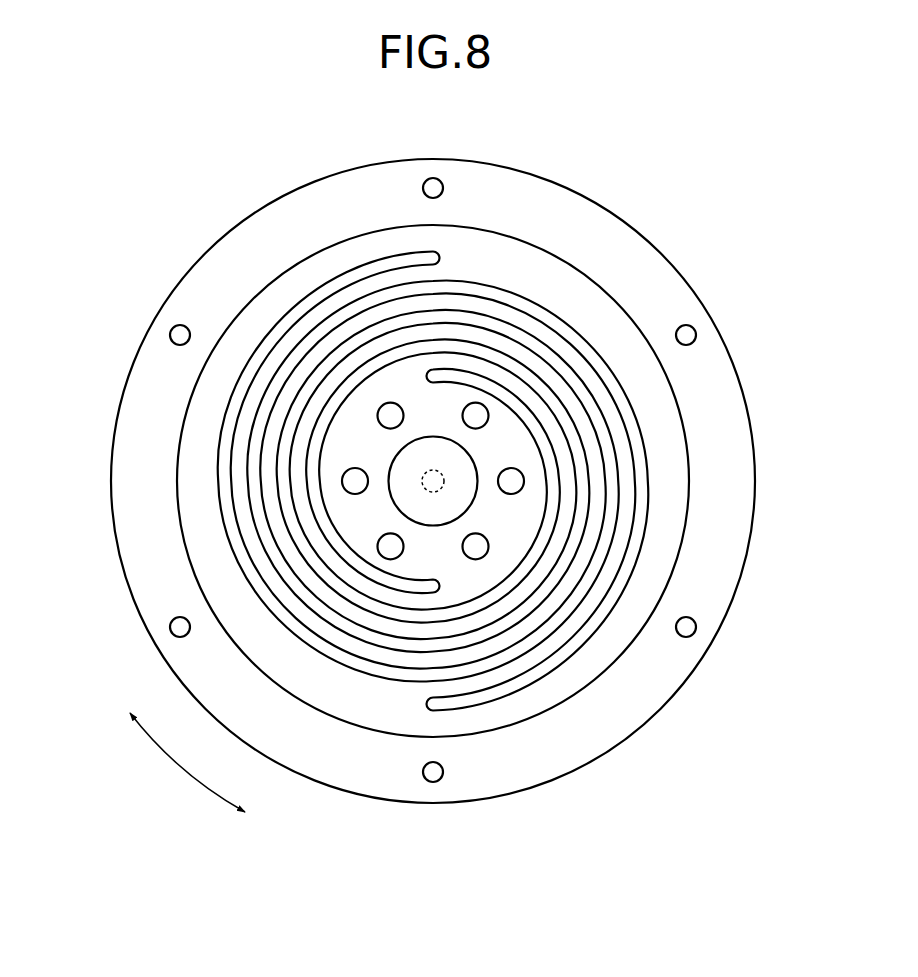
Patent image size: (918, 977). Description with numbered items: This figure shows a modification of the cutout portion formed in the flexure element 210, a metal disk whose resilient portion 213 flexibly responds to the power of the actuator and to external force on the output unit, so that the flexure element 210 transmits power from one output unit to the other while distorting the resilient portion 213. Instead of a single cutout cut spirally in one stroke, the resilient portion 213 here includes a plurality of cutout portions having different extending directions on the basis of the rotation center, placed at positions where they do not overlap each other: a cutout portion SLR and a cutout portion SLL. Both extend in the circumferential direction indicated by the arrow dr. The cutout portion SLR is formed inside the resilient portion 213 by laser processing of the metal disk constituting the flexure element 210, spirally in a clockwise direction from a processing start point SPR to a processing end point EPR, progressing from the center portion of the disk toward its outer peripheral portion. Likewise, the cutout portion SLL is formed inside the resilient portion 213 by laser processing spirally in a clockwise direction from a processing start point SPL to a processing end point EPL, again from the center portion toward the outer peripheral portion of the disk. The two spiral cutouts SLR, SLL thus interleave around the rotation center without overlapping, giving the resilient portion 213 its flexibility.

The flexure element 210 is at (235, 237).
The resilient portion 213 is at (187, 483).
The cutout portion SLR is at (580, 390).
The cutout portion SLL is at (602, 608).
The processing start point SPR is at (430, 368).
The processing end point EPR is at (437, 248).
The processing start point SPL is at (437, 598).
The processing end point EPL is at (428, 714).
The arrow indicating circumferential direction dr is at (187, 762).